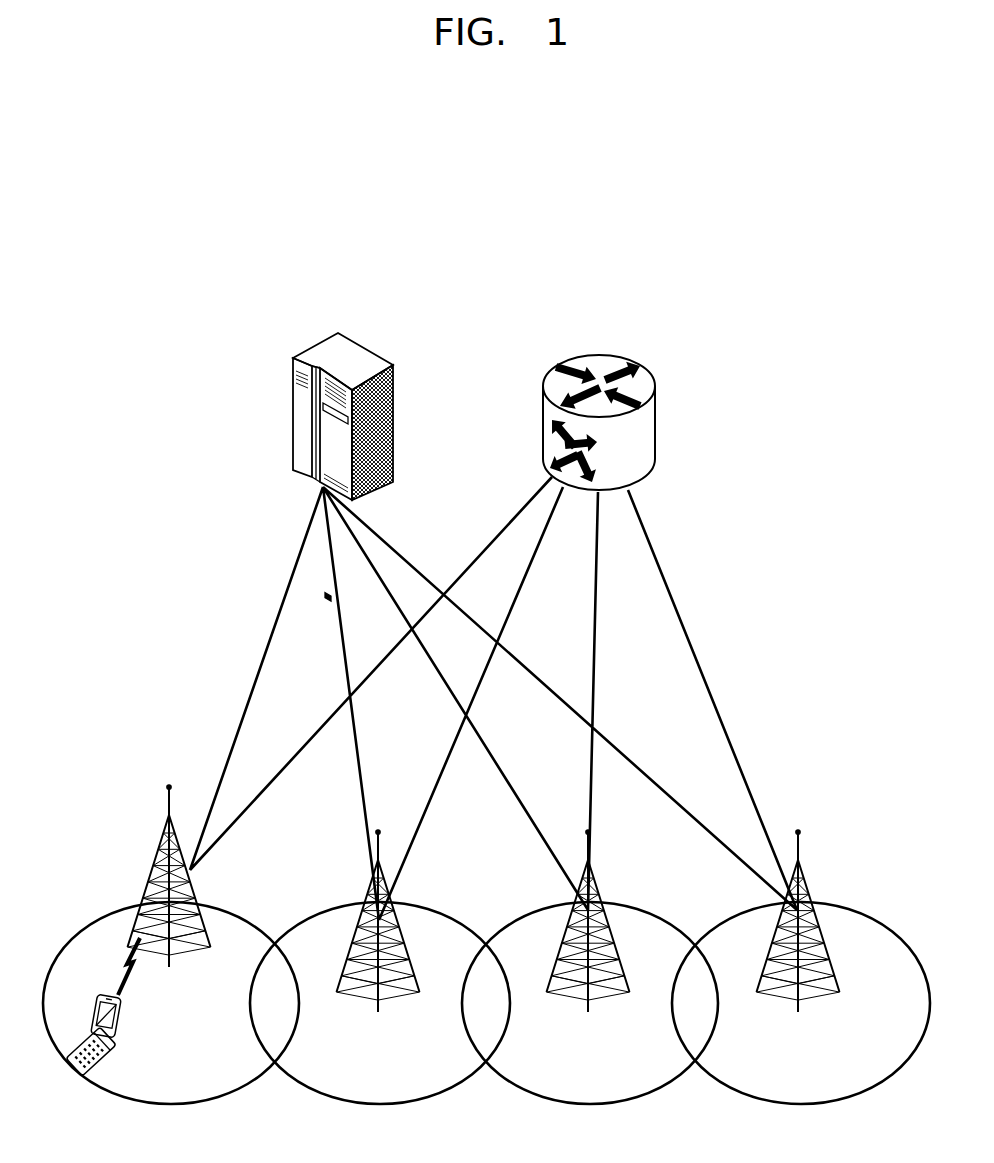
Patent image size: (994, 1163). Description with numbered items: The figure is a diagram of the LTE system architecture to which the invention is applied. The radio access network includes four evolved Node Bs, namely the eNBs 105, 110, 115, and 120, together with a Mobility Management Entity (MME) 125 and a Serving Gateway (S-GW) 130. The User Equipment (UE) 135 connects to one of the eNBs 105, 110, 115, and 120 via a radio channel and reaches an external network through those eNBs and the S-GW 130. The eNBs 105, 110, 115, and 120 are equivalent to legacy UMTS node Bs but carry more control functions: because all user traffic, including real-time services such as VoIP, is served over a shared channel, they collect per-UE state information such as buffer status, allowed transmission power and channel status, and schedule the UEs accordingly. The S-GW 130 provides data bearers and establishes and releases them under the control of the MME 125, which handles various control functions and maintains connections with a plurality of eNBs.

The evolved Node B 105 is at (157, 857).
The evolved Node B 110 is at (368, 880).
The evolved Node B 115 is at (598, 882).
The evolved Node B 120 is at (807, 882).
The Mobility Management Entity 125 is at (328, 355).
The Serving Gateway 130 is at (595, 358).
The User Equipment 135 is at (117, 1027).